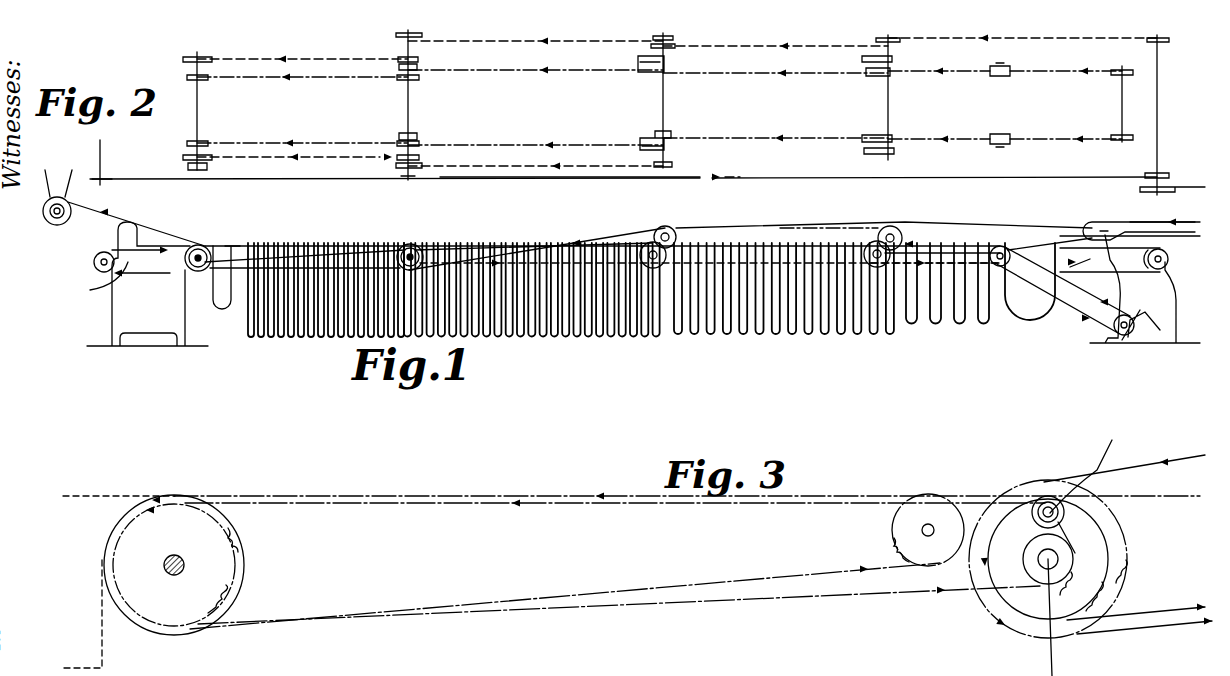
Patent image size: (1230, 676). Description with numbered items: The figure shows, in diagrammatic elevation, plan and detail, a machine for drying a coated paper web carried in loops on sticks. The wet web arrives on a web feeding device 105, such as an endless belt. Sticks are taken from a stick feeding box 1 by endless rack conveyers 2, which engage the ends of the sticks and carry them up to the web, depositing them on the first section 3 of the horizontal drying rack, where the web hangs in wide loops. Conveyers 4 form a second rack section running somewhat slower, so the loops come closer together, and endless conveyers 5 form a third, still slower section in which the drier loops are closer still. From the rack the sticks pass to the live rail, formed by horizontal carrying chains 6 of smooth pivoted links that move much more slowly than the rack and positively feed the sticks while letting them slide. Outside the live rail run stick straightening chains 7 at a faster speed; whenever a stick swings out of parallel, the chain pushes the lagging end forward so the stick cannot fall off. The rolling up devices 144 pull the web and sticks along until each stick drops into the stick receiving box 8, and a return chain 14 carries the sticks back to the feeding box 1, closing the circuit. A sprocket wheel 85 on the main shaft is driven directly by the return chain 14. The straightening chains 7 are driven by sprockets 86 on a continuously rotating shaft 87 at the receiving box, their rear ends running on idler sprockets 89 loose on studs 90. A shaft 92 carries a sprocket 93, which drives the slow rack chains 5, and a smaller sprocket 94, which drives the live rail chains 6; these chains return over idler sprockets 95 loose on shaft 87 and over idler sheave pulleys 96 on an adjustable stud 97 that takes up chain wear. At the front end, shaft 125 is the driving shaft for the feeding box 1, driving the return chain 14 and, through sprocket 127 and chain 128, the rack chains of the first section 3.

In FIG. 1, the stick feeding box 1 is at (1145, 289).
In FIG. 2, the endless rack conveyers 2 is at (1058, 74).
In FIG. 1, the endless rack conveyers 2 is at (1065, 318).
In FIG. 2, the first section of the rack 3 is at (950, 72).
In FIG. 1, the first section of the rack 3 is at (950, 262).
In FIG. 2, the conveyers forming second section of the rack 4 is at (740, 75).
In FIG. 1, the conveyers forming second section of the rack 4 is at (735, 262).
In FIG. 2, the endless conveyers forming third section of the rack 5 is at (502, 74).
In FIG. 1, the endless conveyers forming third section of the rack 5 is at (525, 240).
In FIG. 3, the endless conveyers forming third section of the rack 5 is at (1170, 625).
In FIG. 2, the live rail chains 6 is at (323, 143).
In FIG. 1, the live rail chains 6 is at (345, 262).
In FIG. 3, the live rail chains 6 is at (566, 495).
In FIG. 2, the stick straightening chains 7 is at (250, 180).
In FIG. 1, the stick straightening chains 7 is at (228, 246).
In FIG. 3, the stick straightening chains 7 is at (400, 478).
In FIG. 1, the stick receiving box 8 is at (147, 284).
In FIG. 3, the stick receiving box 8 is at (100, 602).
In FIG. 2, the return chain 14 is at (134, 178).
In FIG. 1, the return chain 14 is at (1085, 218).
In FIG. 1, the sprocket wheel 85 is at (96, 254).
In FIG. 2, the sprockets 86 is at (190, 56).
In FIG. 3, the sprockets 86 is at (240, 540).
In FIG. 2, the shaft 87 is at (196, 106).
In FIG. 1, the shaft 87 is at (196, 272).
In FIG. 3, the idler sprockets 89 is at (892, 528).
In FIG. 3, the studs 90 is at (931, 524).
In FIG. 2, the shaft 92 is at (402, 36).
In FIG. 1, the shaft 92 is at (412, 252).
In FIG. 3, the shaft 92 is at (1128, 530).
In FIG. 2, the sprocket 93 is at (414, 130).
In FIG. 3, the sprocket 93 is at (1060, 577).
In FIG. 2, the smaller sprocket 94 is at (398, 70).
In FIG. 3, the smaller sprocket 94 is at (1105, 577).
In FIG. 2, the idler sprockets 95 is at (203, 82).
In FIG. 3, the idler sprockets 95 is at (240, 566).
In FIG. 3, the idler sheave pulleys 96 is at (1050, 500).
In FIG. 3, the stud 97 is at (1124, 474).
In FIG. 2, the web feeding device 105 is at (1194, 212).
In FIG. 1, the web feeding device 105 is at (1192, 216).
In FIG. 2, the shaft 125 is at (1160, 98).
In FIG. 1, the shaft 125 is at (1168, 257).
In FIG. 2, the sprocket 127 is at (898, 42).
In FIG. 1, the sprocket 127 is at (896, 228).
In FIG. 2, the chain 128 is at (1060, 40).
In FIG. 1, the chain 128 is at (1003, 245).
In FIG. 1, the rolling up devices 144 is at (47, 224).